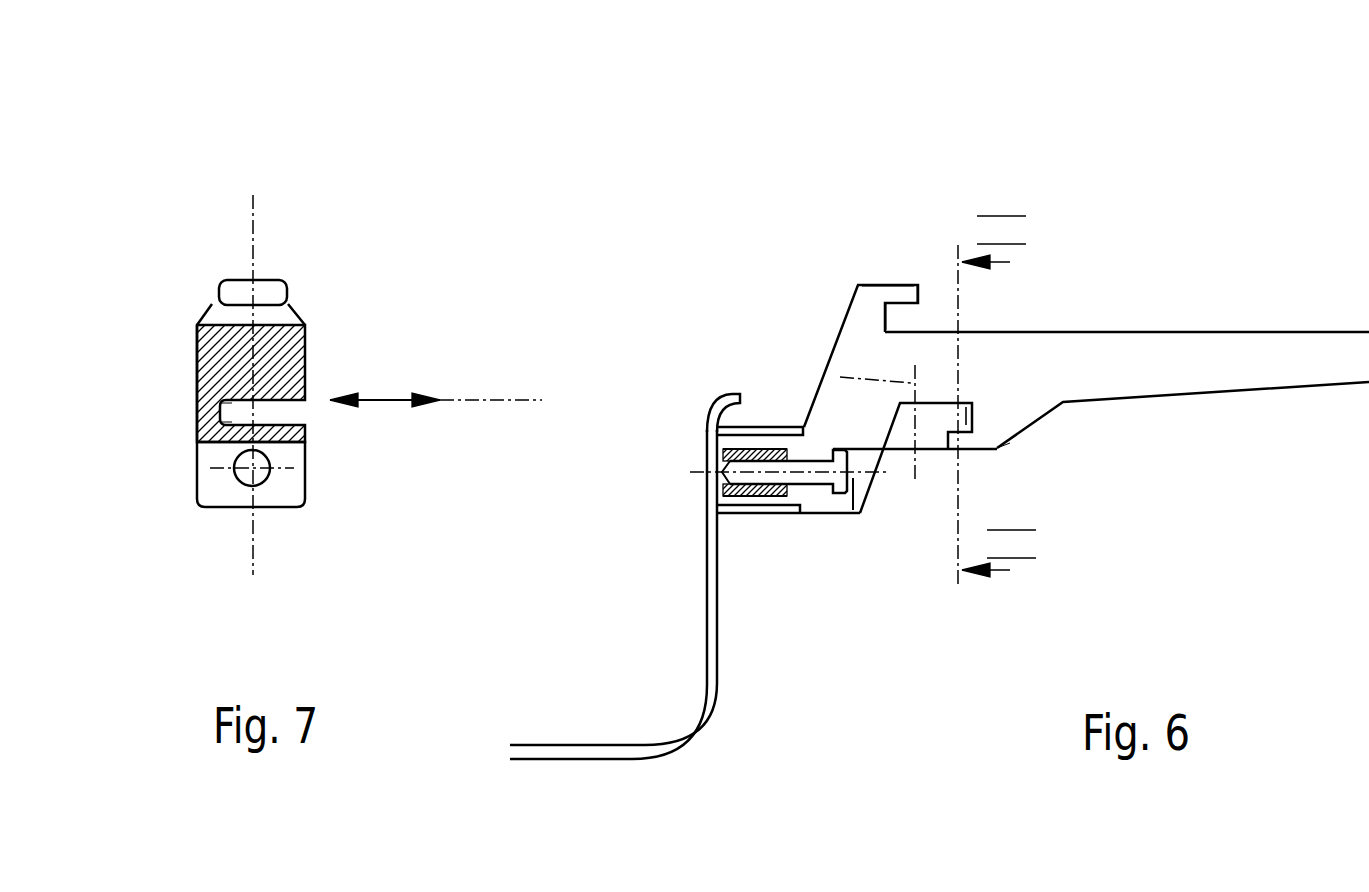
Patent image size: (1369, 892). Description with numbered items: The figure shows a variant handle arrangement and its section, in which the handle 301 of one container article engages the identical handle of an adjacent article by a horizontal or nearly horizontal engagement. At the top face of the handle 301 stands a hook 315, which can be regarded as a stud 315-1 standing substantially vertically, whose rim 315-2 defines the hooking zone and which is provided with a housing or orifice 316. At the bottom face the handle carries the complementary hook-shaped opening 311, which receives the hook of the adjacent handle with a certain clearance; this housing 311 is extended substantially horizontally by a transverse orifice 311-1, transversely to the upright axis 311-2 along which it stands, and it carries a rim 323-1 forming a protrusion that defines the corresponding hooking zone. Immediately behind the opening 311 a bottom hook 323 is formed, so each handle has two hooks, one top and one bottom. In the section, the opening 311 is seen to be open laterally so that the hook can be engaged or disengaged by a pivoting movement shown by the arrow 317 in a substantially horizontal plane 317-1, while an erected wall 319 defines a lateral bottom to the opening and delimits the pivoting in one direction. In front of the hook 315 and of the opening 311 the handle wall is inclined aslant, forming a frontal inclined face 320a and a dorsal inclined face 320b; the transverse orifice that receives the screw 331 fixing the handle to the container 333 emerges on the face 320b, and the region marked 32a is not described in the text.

In FIG. 7, the handle 301 is at (297, 498).
In FIG. 6, the handle 301 is at (1122, 365).
In FIG. 7, the hook-shaped opening 311 is at (197, 422).
In FIG. 6, the hook-shaped opening 311 is at (925, 420).
In FIG. 6, the transverse orifice 311-1 is at (966, 410).
In FIG. 6, the upright axis 311-2 is at (840, 377).
In FIG. 7, the hook 315 is at (232, 288).
In FIG. 6, the hook 315 is at (880, 285).
In FIG. 6, the stud 315-1 is at (868, 312).
In FIG. 6, the rim 315-2 is at (900, 297).
In FIG. 6, the housing or orifice 316 is at (902, 318).
In FIG. 7, the arrow 317 is at (394, 398).
In FIG. 7, the substantially horizontal plane 317-1 is at (465, 404).
In FIG. 7, the erected wall 319 is at (222, 400).
In FIG. 6, the frontal inclined face 320a is at (833, 355).
In FIG. 6, the dorsal inclined face 320b is at (883, 458).
In FIG. 6, the bottom hook 323 is at (968, 452).
In FIG. 6, the rim 323-1 is at (952, 455).
In FIG. 6, the screw 331 is at (798, 513).
In FIG. 6, the screw housing 32a is at (853, 513).
In FIG. 6, the container 333 is at (682, 710).